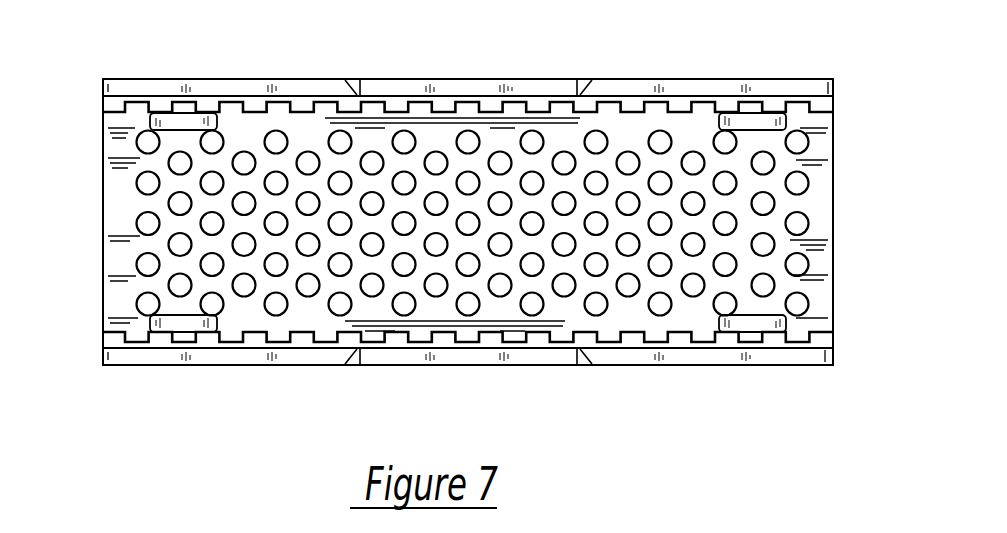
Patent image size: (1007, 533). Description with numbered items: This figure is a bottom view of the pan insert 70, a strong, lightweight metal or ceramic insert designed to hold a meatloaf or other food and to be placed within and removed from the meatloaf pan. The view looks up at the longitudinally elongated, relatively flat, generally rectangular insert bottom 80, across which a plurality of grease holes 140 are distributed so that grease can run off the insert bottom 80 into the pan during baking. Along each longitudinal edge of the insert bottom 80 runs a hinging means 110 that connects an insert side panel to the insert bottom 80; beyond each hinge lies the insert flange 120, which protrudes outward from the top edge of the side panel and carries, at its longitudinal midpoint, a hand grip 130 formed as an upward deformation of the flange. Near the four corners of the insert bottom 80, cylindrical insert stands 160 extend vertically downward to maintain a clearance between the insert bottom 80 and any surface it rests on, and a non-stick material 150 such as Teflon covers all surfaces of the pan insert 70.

The pan insert 70 is at (642, 79).
The insert bottom 80 is at (833, 210).
The hinging means 110 is at (255, 112).
The insert flange 120 is at (833, 93).
The hand grip 130 is at (493, 80).
The grease holes 140 is at (335, 133).
The non-stick material 150 is at (140, 210).
The insert stand 160 is at (178, 120).